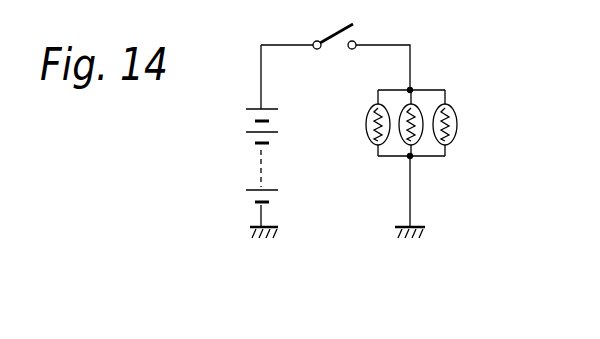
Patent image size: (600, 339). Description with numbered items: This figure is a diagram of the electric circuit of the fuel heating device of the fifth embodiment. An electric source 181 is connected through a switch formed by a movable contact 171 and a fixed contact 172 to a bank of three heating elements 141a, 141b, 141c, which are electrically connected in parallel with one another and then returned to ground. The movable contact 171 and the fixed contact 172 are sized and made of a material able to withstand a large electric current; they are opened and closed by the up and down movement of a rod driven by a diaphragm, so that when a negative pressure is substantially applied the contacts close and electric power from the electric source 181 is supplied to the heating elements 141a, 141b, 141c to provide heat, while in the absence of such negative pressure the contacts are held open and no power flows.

The movable contact 171 is at (333, 34).
The fixed contact 172 is at (357, 38).
The electric source 181 is at (248, 142).
The heating element 141a is at (381, 106).
The heating element 141b is at (415, 106).
The heating element 141c is at (462, 121).